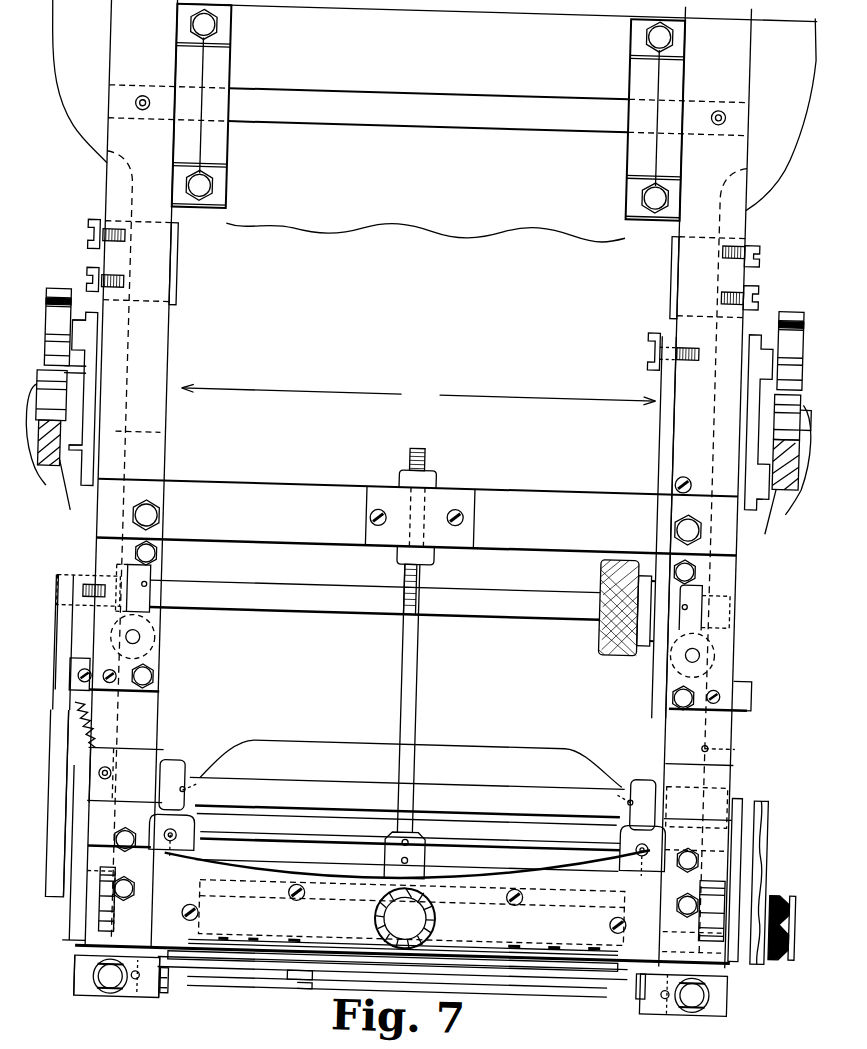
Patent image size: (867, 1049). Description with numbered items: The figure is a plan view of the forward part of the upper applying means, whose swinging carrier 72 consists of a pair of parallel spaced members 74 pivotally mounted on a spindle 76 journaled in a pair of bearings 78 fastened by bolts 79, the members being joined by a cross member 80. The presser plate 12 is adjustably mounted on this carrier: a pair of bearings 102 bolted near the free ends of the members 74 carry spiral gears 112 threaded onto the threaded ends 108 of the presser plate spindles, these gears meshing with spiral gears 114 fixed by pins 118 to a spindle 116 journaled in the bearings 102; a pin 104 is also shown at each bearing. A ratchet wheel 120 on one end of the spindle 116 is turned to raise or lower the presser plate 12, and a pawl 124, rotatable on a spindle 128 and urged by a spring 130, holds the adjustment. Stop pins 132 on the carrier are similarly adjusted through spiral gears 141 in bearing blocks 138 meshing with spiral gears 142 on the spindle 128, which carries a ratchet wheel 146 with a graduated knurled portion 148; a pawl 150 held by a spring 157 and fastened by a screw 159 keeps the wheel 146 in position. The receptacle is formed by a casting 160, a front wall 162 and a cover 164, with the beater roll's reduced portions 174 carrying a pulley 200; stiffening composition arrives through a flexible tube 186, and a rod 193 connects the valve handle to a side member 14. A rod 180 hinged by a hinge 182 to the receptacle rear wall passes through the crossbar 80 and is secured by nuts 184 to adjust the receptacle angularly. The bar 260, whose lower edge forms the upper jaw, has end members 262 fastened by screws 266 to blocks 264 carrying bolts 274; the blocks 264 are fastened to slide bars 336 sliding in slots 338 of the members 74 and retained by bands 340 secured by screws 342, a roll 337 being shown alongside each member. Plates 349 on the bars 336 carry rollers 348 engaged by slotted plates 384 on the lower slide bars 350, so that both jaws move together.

The presser plate 12 is at (326, 752).
The side members 14 is at (340, 958).
The swinging carrier 72 is at (418, 394).
The spaced members 74 is at (165, 322).
The spindle 76 is at (568, 104).
The bearings 78 is at (222, 74).
The bolts 79 is at (429, 111).
The cross member 80 is at (323, 490).
The bearings 102 is at (165, 765).
The pivot pin 104 is at (630, 820).
The threaded ends 108 is at (204, 826).
The spiral gears 112 is at (186, 845).
The spiral gears 114 is at (190, 768).
The spindle 116 is at (457, 778).
The pins 118 is at (187, 796).
The ratchet wheel 120 is at (58, 772).
The pawl 124 is at (62, 668).
The spindle 128 is at (552, 610).
The spring 130 is at (102, 752).
The pins 132 is at (143, 645).
The bearing blocks 138 is at (160, 690).
The spiral gears 141 is at (158, 640).
The spiral gears 142 is at (156, 573).
The ratchet wheel 146 is at (645, 556).
The knurled portion 148 is at (616, 556).
The pawl 150 is at (660, 488).
The spring 157 is at (683, 470).
The screw 159 is at (643, 350).
The casting 160 is at (222, 966).
The front wall 162 is at (258, 966).
The cover 164 is at (474, 958).
The reduced portions 174 is at (786, 896).
The rod 180 is at (412, 641).
The hinge 182 is at (434, 855).
The nuts 184 is at (436, 482).
The flexible tube 186 is at (386, 912).
The rod 193 is at (80, 670).
The pulley 200 is at (790, 875).
The bar 260 is at (545, 982).
The end members 262 is at (181, 990).
The blocks 264 is at (135, 1005).
The screws 266 is at (640, 988).
The bolts 274 is at (106, 986).
The slide bars 336 is at (160, 437).
The roller 337 is at (50, 300).
The slots 338 is at (737, 748).
The bands 340 is at (172, 272).
The screws 342 is at (85, 278).
The rollers 348 is at (65, 378).
The plates 349 is at (95, 338).
The slide bars 350 is at (418, 458).
The plates 384 is at (413, 506).